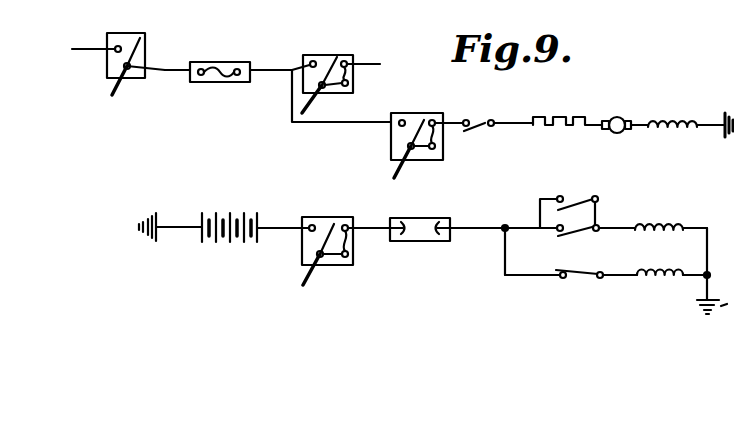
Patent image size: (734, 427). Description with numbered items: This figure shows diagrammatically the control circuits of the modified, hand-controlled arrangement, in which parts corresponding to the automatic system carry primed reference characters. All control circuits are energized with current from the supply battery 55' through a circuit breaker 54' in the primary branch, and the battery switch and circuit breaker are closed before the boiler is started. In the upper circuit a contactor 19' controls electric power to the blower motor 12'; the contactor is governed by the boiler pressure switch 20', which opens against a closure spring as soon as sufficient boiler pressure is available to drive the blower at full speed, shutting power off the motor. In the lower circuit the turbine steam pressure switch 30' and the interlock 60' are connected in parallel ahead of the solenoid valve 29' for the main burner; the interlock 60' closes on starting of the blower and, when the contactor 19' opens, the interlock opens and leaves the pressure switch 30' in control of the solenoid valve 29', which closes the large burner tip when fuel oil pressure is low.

The contactor 19' is at (585, 218).
The blower motor 12' is at (684, 137).
The supply battery 55' is at (229, 211).
The circuit breaker 54' is at (420, 246).
The interlock 60' is at (569, 199).
The pressure switch 30' is at (583, 243).
The pressure switch 20' is at (579, 288).
The solenoid valve 29' is at (675, 208).